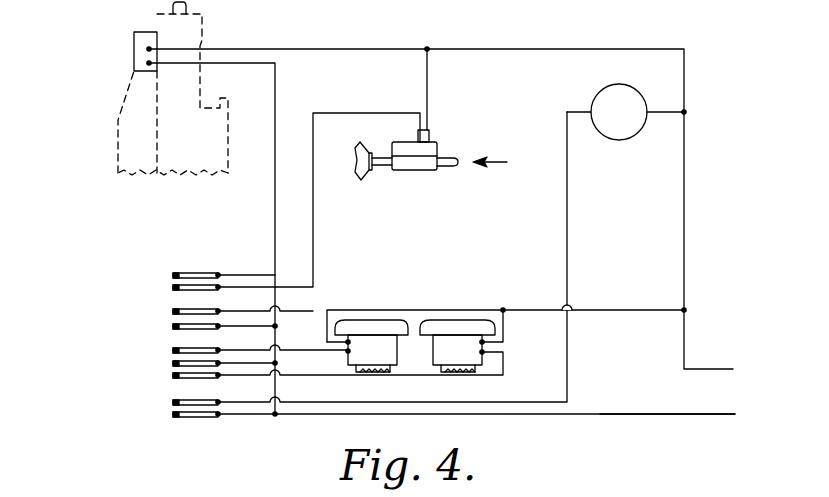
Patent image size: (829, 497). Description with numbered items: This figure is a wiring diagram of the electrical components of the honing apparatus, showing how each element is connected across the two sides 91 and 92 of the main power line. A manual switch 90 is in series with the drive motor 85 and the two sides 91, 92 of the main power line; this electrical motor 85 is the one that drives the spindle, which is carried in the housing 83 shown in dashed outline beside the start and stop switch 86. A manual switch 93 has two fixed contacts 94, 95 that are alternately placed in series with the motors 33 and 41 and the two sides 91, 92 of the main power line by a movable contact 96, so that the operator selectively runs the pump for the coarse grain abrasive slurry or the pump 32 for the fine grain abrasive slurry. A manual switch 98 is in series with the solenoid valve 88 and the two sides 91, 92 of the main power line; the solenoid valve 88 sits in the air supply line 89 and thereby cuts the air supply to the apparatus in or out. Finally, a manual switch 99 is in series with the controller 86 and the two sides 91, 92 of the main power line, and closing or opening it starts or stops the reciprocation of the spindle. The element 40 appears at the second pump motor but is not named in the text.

The pump 32 is at (376, 368).
The motor 33 is at (380, 324).
The motor 40 is at (458, 368).
The motor 41 is at (468, 324).
The housing 83 is at (120, 127).
The electrical motor 85 is at (606, 84).
The start and stop switch 86 is at (133, 43).
The solenoid valve 88 is at (414, 162).
The air supply line 89 is at (454, 160).
The manual switch 90 is at (174, 422).
The side of main power line 91 is at (397, 47).
The side of main power line 92 is at (722, 418).
The manual switch 93 is at (168, 367).
The fixed contact 94 is at (174, 350).
The fixed contact 95 is at (173, 375).
The movable contact 96 is at (173, 363).
The manual switch 98 is at (172, 318).
The manual switch 99 is at (172, 279).